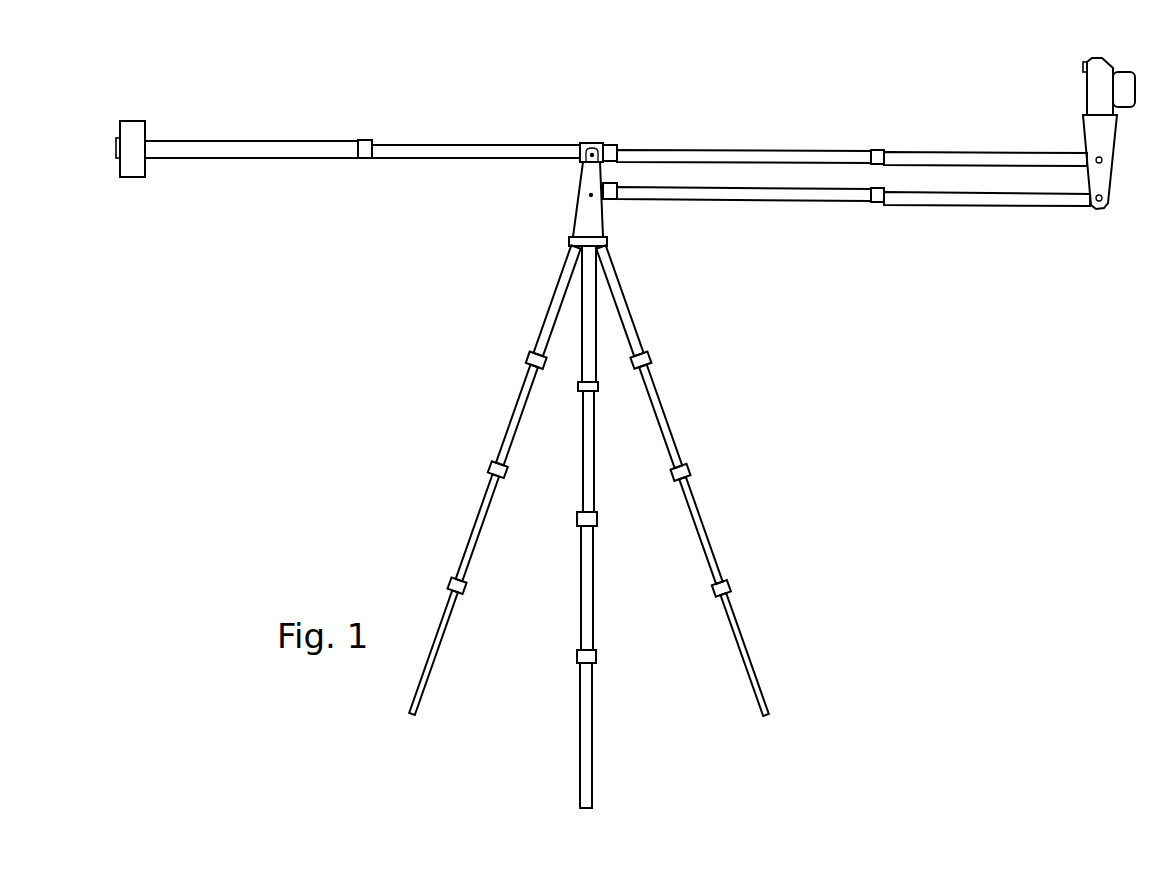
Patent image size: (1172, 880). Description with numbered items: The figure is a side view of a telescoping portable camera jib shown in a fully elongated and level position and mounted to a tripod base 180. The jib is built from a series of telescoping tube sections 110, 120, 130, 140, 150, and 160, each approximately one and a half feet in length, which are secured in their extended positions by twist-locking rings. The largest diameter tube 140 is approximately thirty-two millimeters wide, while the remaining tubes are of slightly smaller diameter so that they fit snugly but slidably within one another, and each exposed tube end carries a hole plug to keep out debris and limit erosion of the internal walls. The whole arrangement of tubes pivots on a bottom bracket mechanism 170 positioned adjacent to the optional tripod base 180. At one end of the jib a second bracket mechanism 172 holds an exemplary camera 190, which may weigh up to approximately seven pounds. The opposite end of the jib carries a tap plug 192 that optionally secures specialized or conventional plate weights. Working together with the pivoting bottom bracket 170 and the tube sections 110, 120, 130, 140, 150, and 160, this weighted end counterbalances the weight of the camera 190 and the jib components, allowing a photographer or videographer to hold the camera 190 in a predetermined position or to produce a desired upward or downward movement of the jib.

The tube section 110 is at (461, 140).
The tube section 120 is at (711, 144).
The tube section 130 is at (979, 146).
The largest diameter tube 140 is at (227, 136).
The tube section 150 is at (717, 207).
The tube section 160 is at (974, 212).
The bottom bracket mechanism 170 is at (578, 192).
The second bracket mechanism 172 is at (1112, 190).
The tripod base 180 is at (461, 513).
The camera 190 is at (1088, 58).
The tap plug 192 is at (137, 178).